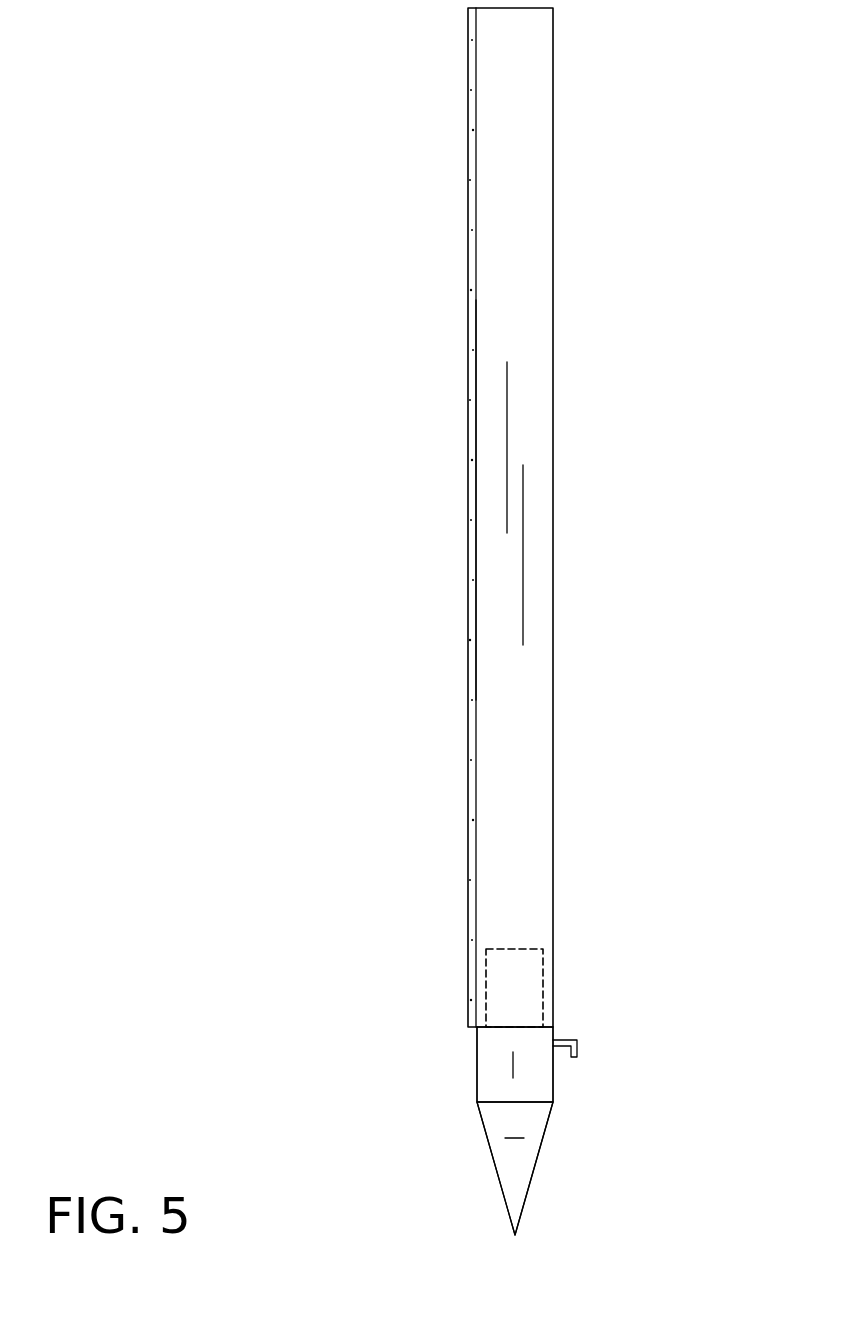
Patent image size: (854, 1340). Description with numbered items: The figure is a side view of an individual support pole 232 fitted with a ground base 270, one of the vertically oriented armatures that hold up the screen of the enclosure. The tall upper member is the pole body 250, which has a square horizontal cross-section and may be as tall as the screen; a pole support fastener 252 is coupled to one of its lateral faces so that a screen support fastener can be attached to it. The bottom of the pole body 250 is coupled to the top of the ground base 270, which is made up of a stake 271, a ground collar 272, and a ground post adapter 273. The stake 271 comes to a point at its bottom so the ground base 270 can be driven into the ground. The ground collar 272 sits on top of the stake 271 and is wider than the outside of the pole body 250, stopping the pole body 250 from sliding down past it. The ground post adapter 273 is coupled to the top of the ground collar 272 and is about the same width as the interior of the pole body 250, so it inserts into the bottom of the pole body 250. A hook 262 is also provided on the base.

The individual support pole 232 is at (340, 1231).
The pole body 250 is at (532, 328).
The pole support fastener 252 is at (468, 628).
The ground base 270 is at (654, 947).
The ground post adapter 273 is at (505, 982).
The ground collar 272 is at (477, 1058).
The stake 271 is at (492, 1162).
The hook 262 is at (577, 1052).